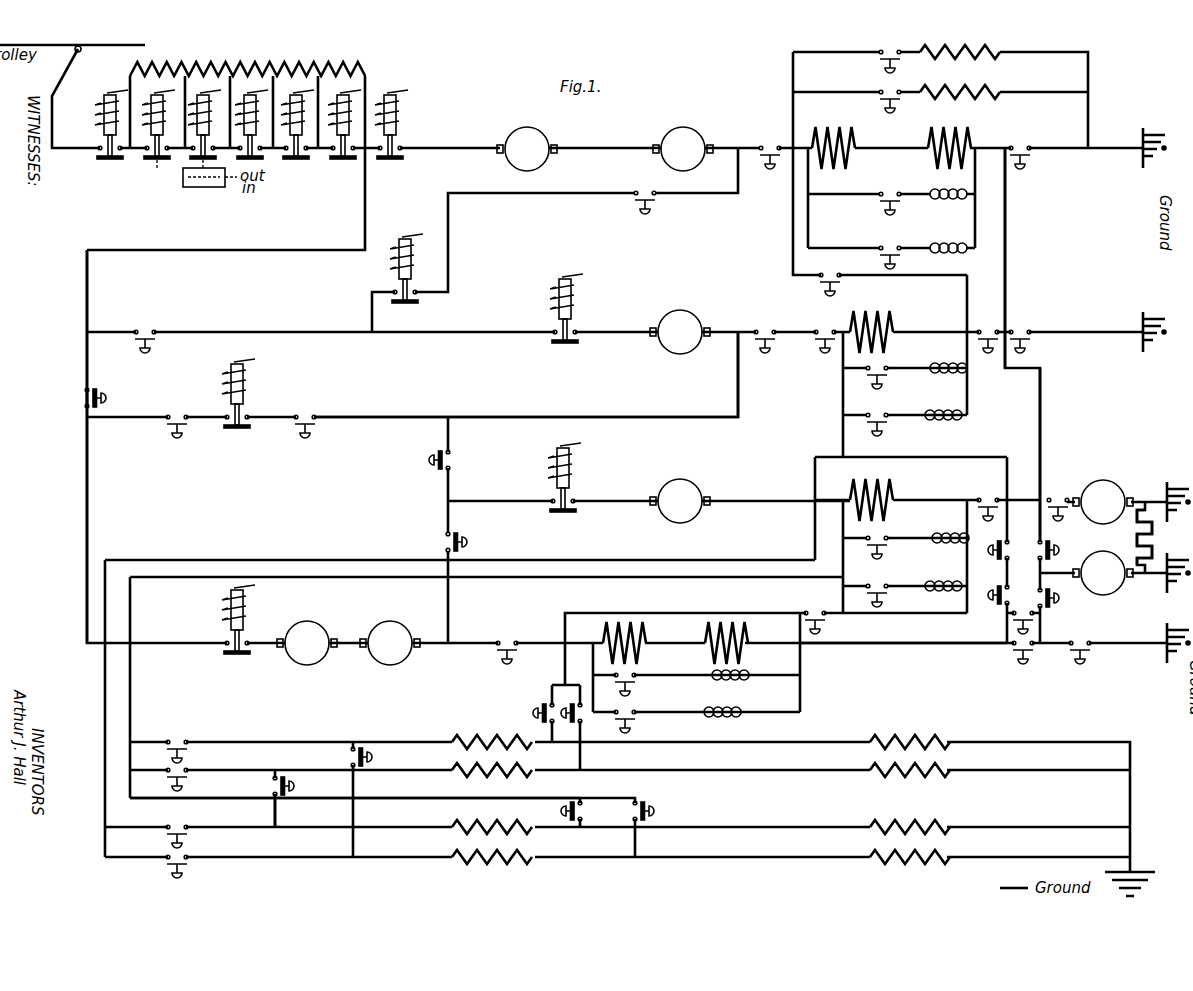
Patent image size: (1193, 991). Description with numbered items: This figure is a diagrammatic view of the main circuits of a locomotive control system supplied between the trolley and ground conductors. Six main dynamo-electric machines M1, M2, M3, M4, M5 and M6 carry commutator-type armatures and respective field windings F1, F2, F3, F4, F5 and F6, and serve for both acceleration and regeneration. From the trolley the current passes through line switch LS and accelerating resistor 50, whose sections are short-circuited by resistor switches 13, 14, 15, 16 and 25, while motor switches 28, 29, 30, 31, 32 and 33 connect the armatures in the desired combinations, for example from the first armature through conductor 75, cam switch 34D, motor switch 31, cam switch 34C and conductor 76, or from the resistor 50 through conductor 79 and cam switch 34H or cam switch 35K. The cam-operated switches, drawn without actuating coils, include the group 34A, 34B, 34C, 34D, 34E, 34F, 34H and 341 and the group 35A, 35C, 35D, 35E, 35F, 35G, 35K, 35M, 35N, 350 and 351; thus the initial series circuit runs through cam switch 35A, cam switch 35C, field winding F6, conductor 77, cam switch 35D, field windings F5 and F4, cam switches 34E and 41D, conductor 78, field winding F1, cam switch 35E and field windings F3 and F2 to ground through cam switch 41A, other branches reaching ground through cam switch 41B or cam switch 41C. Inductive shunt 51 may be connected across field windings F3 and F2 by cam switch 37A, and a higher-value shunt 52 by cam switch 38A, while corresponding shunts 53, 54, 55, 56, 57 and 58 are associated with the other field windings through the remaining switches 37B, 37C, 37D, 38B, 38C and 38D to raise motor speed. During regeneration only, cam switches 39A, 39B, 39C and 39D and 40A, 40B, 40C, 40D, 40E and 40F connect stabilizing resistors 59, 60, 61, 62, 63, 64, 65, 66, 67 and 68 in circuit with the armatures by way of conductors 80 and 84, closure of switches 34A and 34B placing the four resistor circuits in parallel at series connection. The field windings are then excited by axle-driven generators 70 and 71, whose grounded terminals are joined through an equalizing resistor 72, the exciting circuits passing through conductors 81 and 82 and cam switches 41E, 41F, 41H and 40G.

The accelerating resistor 50 is at (232, 70).
The line switch LS is at (97, 124).
The resistor switch 13 is at (158, 138).
The resistor switch 14 is at (208, 124).
The resistor switch 15 is at (260, 133).
The resistor switch 16 is at (298, 137).
The resistor switch 25 is at (344, 137).
The motor switch 28 is at (401, 124).
The motor switch 29 is at (390, 268).
The motor switch 30 is at (582, 308).
The motor switch 31 is at (238, 405).
The motor switch 32 is at (581, 477).
The motor switch 33 is at (220, 619).
The main dynamo-electric machine M1 is at (701, 308).
The main dynamo-electric machine M2 is at (530, 131).
The main dynamo-electric machine M3 is at (710, 125).
The main dynamo-electric machine M4 is at (425, 615).
The main dynamo-electric machine M5 is at (335, 615).
The main dynamo-electric machine M6 is at (702, 473).
The field winding F1 is at (883, 327).
The field winding F2 is at (937, 148).
The field winding F3 is at (844, 148).
The field winding F4 is at (736, 640).
The field winding F5 is at (633, 640).
The field winding F6 is at (880, 496).
The cam-operated switch 34A is at (302, 786).
The cam-operated switch 34B is at (381, 757).
The cam-operated switch 34C is at (154, 433).
The cam-operated switch 34D is at (311, 414).
The cam-operated switch 34E is at (1010, 595).
The cam-operated switch 34F is at (758, 329).
The cam-operated switch 34H is at (105, 387).
The cam-operated switch 35A is at (625, 205).
The cam-operated switch 35C is at (435, 542).
The cam-operated switch 35D is at (807, 612).
The cam-operated switch 35E is at (808, 286).
The cam-operated switch 35F is at (820, 329).
The cam-operated switch 35G is at (764, 146).
The cam-operated switch 35K is at (149, 330).
The cam-operated switch 35M is at (459, 462).
The cam-operated switch 35N is at (983, 496).
The cam-operated switch 350 is at (987, 355).
The cam-operated switch 351 is at (510, 641).
The cam-operated switch 37A is at (873, 205).
The cam-operated switch 37B is at (891, 384).
The cam-operated switch 37C is at (893, 547).
The cam-operated switch 37D is at (642, 690).
The cam-operated switch 38A is at (873, 258).
The cam-operated switch 38B is at (891, 432).
The cam-operated switch 38C is at (882, 586).
The cam-operated switch 38D is at (642, 726).
The cam-operated switch 39A is at (195, 752).
The cam-operated switch 39B is at (195, 780).
The cam-operated switch 39C is at (195, 837).
The cam-operated switch 39D is at (195, 867).
The cam-operated switch 40A is at (868, 61).
The cam-operated switch 40B is at (868, 103).
The cam-operated switch 40C is at (493, 704).
The cam-operated switch 40D is at (571, 722).
The cam-operated switch 40E is at (551, 811).
The cam-operated switch 40F is at (661, 811).
The cam-operated switch 40G is at (1064, 544).
The cam-operated switch 41A is at (1038, 158).
The cam-operated switch 41B is at (1039, 346).
The cam-operated switch 41C is at (1081, 662).
The cam-operated switch 41D is at (1011, 550).
The cam-operated switch 41E is at (1065, 606).
The cam-operated switch 41F is at (1061, 496).
The cam-operated switch 41H is at (1003, 625).
The cam-operated switch 341 is at (1018, 662).
The inductive shunt 51 is at (947, 207).
The inductive shunt 52 is at (948, 241).
The inductive shunt 53 is at (948, 382).
The inductive shunt 54 is at (943, 408).
The inductive shunt 55 is at (950, 552).
The inductive shunt 56 is at (943, 581).
The inductive shunt 57 is at (742, 686).
The inductive shunt 58 is at (737, 723).
The stabilizing resistor 59 is at (970, 60).
The stabilizing resistor 60 is at (970, 100).
The stabilizing resistor 61 is at (491, 733).
The stabilizing resistor 62 is at (480, 762).
The stabilizing resistor 63 is at (482, 817).
The stabilizing resistor 64 is at (477, 847).
The stabilizing resistor 65 is at (921, 733).
The stabilizing resistor 66 is at (921, 762).
The stabilizing resistor 67 is at (921, 819).
The stabilizing resistor 68 is at (921, 849).
The axle-driven generator 70 is at (1119, 497).
The axle-driven generator 71 is at (1119, 587).
The equalizing resistor 72 is at (1137, 540).
The conductor 75 is at (668, 418).
The conductor 76 is at (87, 495).
The conductor 77 is at (903, 632).
The conductor 78 is at (984, 457).
The conductor 79 is at (315, 245).
The conductor 80 is at (212, 798).
The conductor 81 is at (1005, 250).
The conductor 82 is at (1040, 425).
The conductor 84 is at (730, 555).